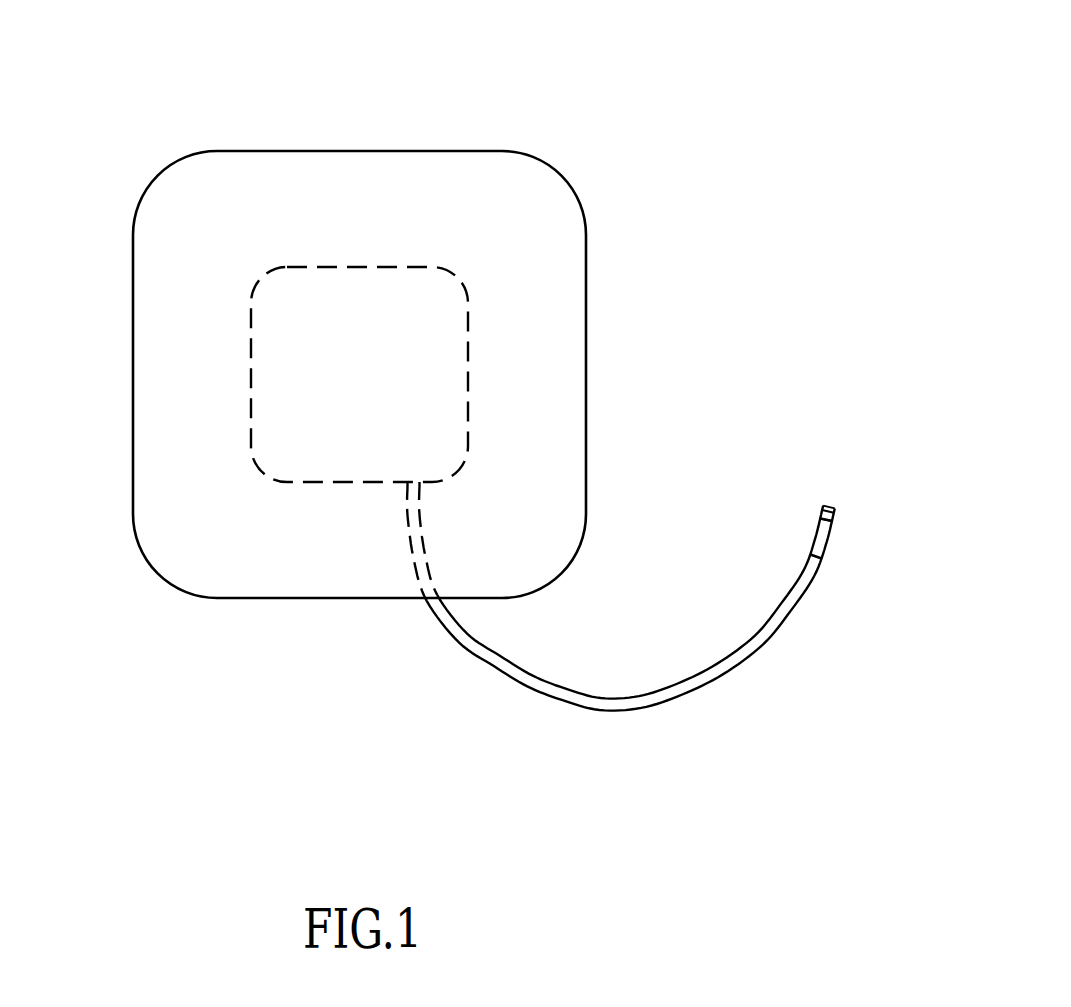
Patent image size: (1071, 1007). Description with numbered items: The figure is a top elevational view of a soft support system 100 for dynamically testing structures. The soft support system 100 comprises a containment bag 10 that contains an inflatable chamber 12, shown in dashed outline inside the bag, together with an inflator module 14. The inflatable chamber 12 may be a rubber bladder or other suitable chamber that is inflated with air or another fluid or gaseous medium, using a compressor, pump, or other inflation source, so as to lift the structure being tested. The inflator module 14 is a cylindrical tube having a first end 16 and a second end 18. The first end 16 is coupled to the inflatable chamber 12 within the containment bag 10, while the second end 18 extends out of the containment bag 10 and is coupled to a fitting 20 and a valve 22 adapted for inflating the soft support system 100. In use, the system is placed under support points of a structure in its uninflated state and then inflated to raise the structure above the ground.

The soft support system 100 is at (652, 82).
The containment bag 10 is at (168, 162).
The inflatable chamber 12 is at (250, 323).
The inflator module 14 is at (795, 618).
The first end 16 is at (399, 491).
The second end 18 is at (830, 505).
The fitting 20 is at (832, 536).
The valve 22 is at (836, 515).